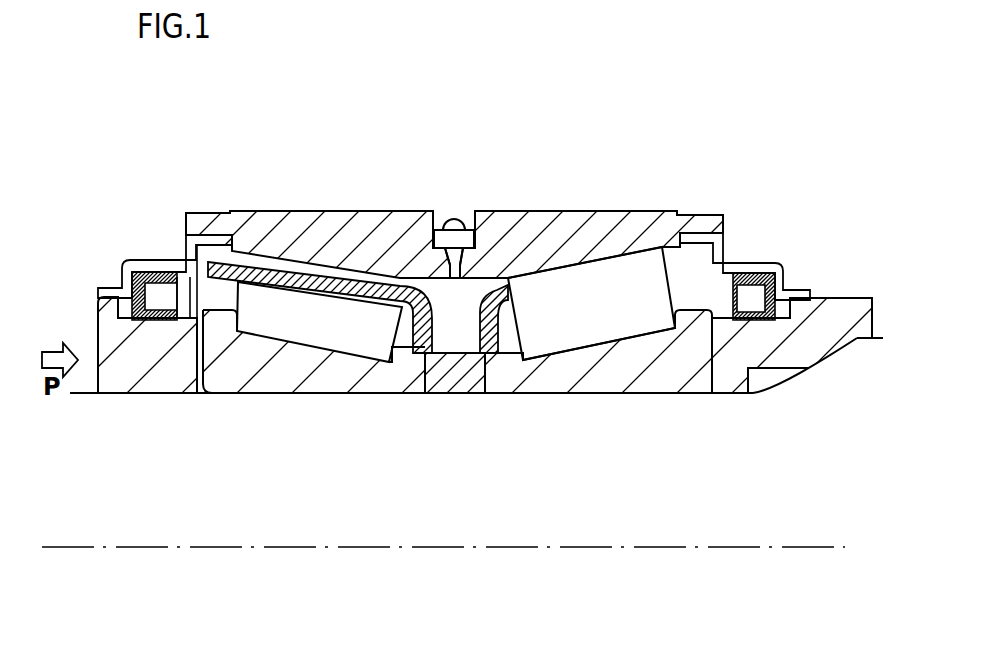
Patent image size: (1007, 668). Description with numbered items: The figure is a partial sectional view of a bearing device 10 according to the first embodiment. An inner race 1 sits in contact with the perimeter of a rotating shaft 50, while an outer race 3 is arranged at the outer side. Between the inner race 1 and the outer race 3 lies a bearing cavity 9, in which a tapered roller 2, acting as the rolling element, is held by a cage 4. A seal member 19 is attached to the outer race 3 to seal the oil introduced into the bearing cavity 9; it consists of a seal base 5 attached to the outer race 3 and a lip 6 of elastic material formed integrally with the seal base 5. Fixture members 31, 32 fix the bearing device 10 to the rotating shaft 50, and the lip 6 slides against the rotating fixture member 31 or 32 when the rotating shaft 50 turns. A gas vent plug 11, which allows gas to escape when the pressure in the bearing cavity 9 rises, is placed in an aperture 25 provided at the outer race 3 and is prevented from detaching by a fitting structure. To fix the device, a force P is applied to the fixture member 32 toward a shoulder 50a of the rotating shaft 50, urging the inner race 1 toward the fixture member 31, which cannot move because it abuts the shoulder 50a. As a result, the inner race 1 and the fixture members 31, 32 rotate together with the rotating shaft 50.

The inner race 1 is at (607, 368).
The tapered roller 2 is at (592, 297).
The outer race 3 is at (541, 228).
The cage 4 is at (487, 343).
The seal base 5 is at (150, 258).
The lip 6 is at (158, 317).
The bearing cavity 9 is at (470, 293).
The bearing device 10 is at (503, 330).
The gas vent plug 11 is at (470, 213).
The seal member 19 is at (458, 289).
The aperture 25 is at (441, 210).
The fixture member 31 is at (828, 325).
The fixture member 32 is at (127, 368).
The rotating shaft 50 is at (462, 473).
The shoulder 50a is at (798, 376).